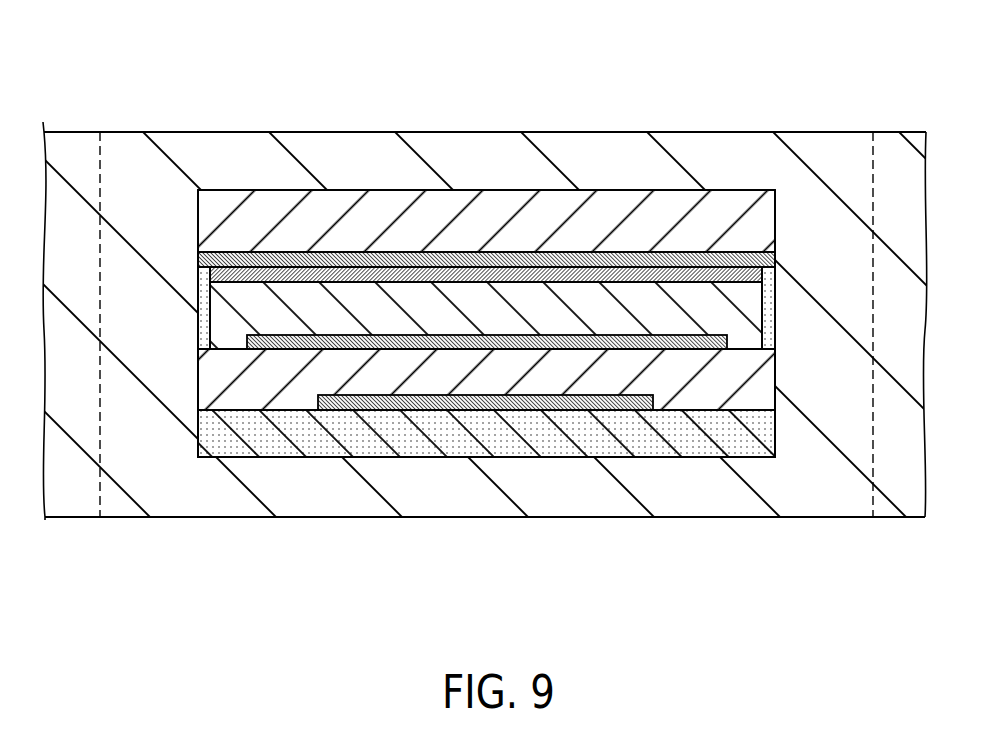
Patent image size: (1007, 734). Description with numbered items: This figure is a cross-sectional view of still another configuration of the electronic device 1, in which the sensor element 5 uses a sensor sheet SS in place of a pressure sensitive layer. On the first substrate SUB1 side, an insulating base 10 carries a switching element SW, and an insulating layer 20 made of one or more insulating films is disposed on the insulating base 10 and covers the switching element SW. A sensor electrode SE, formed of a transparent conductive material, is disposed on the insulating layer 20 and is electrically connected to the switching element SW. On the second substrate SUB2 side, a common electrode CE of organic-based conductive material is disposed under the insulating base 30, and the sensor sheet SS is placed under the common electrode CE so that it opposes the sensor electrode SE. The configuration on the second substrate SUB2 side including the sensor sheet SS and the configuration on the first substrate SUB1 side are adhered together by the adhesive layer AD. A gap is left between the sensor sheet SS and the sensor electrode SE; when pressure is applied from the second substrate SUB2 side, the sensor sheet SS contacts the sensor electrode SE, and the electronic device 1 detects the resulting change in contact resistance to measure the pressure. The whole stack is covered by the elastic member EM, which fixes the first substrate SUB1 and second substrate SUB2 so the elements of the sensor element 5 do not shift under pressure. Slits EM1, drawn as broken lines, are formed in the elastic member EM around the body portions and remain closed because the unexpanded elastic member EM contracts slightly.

The electronic device 1 is at (793, 77).
The sensor element 5 is at (778, 294).
The insulating base 10 is at (737, 441).
The insulating layer 20 is at (694, 392).
The insulating base 30 is at (373, 212).
The first substrate SUB1 is at (196, 392).
The second substrate SUB2 is at (197, 232).
The adhesive layer AD is at (198, 321).
The common electrode CE is at (511, 261).
The sensor sheet SS is at (612, 273).
The sensor electrode SE is at (513, 343).
The switching element SW is at (612, 400).
The elastic member EM is at (198, 145).
The slit EM1 is at (100, 483).